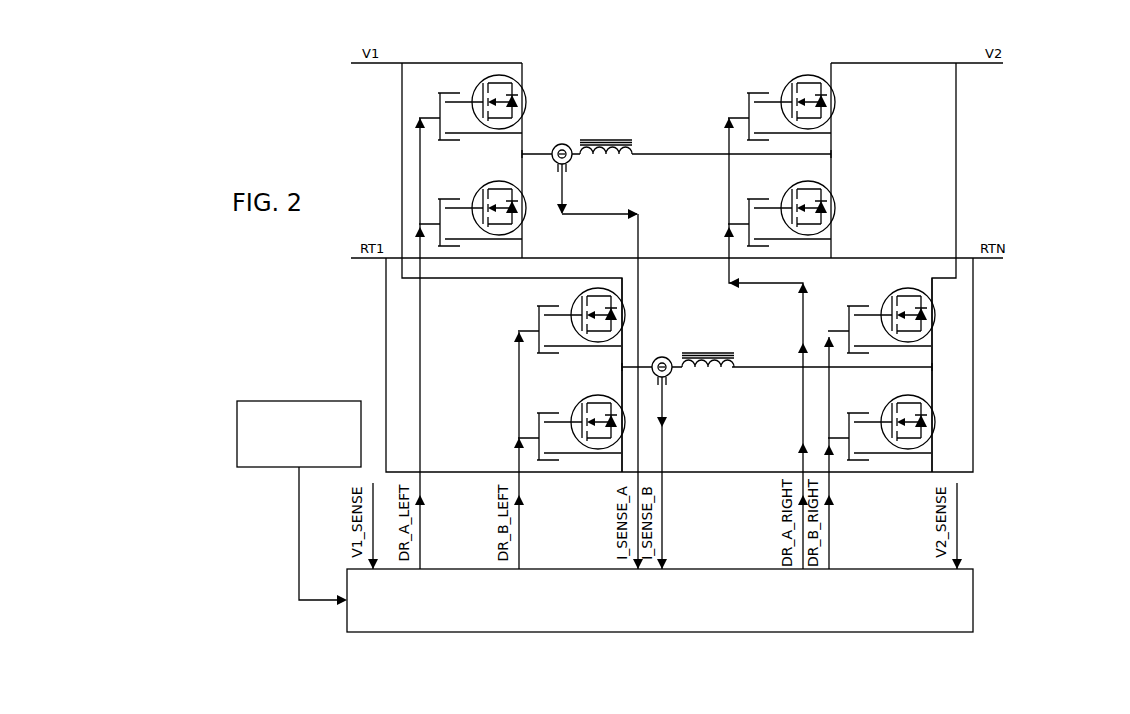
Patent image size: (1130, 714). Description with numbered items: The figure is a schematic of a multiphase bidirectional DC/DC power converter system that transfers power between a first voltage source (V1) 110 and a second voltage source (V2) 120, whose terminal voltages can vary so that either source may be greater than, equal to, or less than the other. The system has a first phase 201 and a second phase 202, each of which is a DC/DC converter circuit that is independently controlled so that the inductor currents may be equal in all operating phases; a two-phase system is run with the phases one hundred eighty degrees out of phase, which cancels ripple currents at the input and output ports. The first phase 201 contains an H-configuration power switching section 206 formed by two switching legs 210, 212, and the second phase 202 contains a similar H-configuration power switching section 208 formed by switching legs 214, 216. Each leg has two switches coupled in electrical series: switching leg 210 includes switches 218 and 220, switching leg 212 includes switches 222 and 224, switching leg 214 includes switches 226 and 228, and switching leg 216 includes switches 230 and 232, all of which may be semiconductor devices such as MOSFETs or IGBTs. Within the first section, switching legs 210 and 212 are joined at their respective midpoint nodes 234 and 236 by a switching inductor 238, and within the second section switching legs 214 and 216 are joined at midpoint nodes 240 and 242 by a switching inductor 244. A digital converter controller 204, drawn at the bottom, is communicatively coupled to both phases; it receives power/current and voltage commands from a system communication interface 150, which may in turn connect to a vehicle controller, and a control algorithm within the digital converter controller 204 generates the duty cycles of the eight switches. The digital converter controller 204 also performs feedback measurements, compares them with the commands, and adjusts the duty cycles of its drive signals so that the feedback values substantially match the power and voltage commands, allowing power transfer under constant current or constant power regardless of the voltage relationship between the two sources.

The first voltage source (V1) 110 is at (390, 63).
The second voltage source (V2) 120 is at (970, 63).
The system communication interface 150 is at (278, 401).
The first phase 201 is at (1037, 148).
The second phase 202 is at (1030, 335).
The digital converter controller 204 is at (973, 585).
The H-configuration power switching section 206 is at (622, 100).
The H-configuration power switching section 208 is at (698, 337).
The switching leg 210 is at (545, 140).
The switching leg 212 is at (783, 73).
The switching leg 214 is at (617, 268).
The switching leg 216 is at (880, 292).
The switch 218 is at (486, 137).
The switch 220 is at (472, 187).
The switch 222 is at (845, 108).
The switch 224 is at (845, 200).
The switch 226 is at (523, 305).
The switch 228 is at (578, 390).
The switch 230 is at (950, 322).
The switch 232 is at (948, 412).
The midpoint node 234 is at (524, 158).
The midpoint node 236 is at (831, 154).
The switching inductor 238 is at (607, 157).
The midpoint node 240 is at (622, 367).
The midpoint node 242 is at (932, 367).
The switching inductor 244 is at (712, 380).